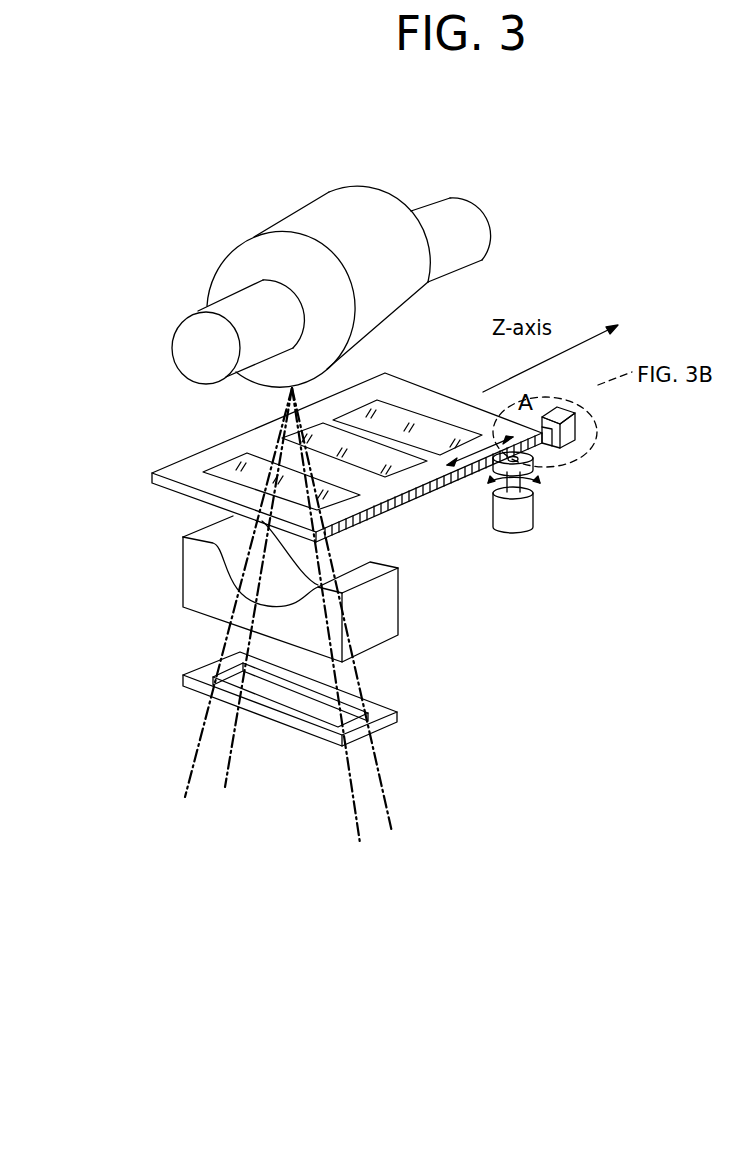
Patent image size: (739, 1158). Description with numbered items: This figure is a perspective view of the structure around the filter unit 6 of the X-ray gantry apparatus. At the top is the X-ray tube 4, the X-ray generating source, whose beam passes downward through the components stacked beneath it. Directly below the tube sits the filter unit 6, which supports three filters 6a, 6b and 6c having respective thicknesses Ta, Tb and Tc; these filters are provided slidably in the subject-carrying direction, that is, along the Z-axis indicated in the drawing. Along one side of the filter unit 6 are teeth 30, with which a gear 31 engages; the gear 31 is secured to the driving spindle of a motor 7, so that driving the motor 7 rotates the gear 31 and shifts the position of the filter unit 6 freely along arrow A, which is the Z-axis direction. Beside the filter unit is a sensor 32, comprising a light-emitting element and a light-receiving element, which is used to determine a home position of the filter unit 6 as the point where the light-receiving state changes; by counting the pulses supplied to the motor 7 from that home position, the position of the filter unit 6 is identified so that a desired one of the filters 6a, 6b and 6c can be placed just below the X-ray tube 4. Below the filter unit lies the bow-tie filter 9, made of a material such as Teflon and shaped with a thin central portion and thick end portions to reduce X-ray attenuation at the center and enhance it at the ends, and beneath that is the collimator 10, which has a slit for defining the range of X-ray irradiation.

The X-ray tube 4 is at (348, 202).
The filter unit 6 is at (190, 473).
The filter 6a is at (238, 463).
The filter 6b is at (398, 480).
The filter 6c is at (388, 420).
The motor 7 is at (520, 523).
The bow-tie filter 9 is at (387, 618).
The collimator 10 is at (393, 713).
The teeth 30 is at (455, 485).
The gear 31 is at (532, 455).
The sensor 32 is at (577, 450).